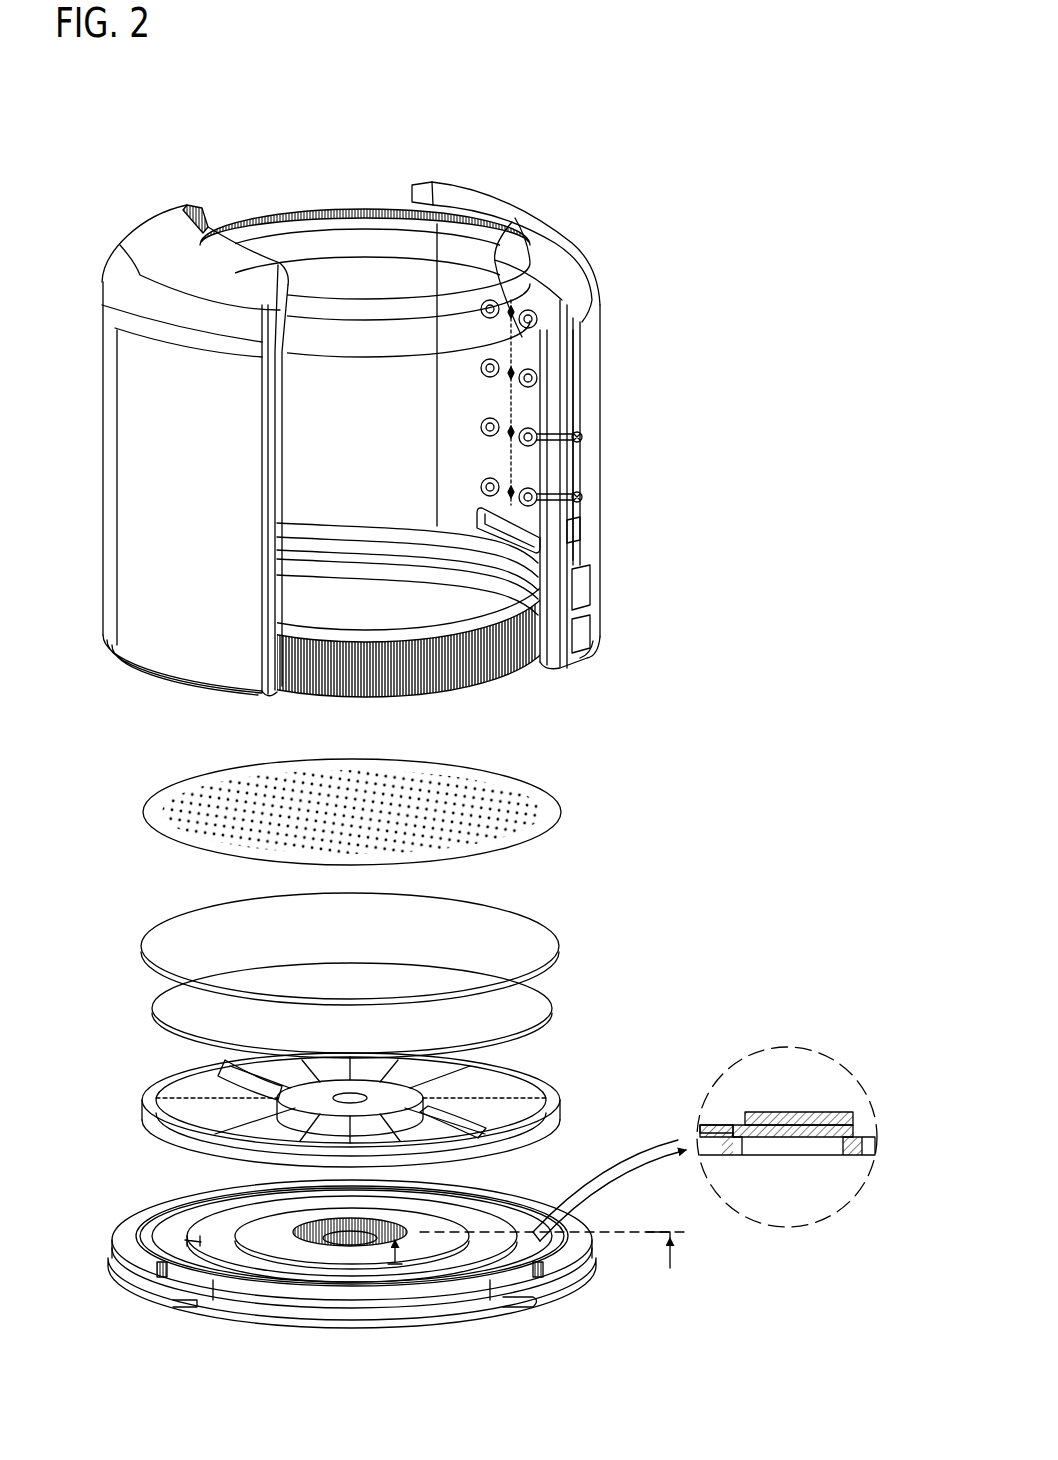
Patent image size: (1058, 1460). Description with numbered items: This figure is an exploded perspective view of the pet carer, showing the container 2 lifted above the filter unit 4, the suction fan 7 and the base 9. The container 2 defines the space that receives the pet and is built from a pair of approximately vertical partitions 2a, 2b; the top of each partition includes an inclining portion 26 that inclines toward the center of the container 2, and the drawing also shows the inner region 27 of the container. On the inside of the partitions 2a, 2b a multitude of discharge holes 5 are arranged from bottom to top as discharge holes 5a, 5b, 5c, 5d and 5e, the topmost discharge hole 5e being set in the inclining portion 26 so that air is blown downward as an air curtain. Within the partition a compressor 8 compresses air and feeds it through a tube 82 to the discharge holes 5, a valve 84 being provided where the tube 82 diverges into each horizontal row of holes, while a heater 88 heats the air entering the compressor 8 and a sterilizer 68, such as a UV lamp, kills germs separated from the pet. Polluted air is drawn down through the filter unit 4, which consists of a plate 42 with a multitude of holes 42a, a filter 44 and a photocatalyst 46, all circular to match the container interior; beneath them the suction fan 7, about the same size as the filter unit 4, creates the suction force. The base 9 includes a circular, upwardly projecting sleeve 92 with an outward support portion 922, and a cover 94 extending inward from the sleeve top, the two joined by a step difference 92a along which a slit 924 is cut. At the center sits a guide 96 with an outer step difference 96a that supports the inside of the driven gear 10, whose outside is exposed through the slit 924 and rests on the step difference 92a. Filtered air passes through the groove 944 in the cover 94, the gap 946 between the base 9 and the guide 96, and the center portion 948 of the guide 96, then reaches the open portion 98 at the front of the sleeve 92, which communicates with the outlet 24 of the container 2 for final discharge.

The container 2 is at (143, 218).
The partition 2a is at (100, 396).
The partition 2b is at (594, 244).
The inclining portion 26 is at (545, 227).
The inner cylinder 27 is at (362, 266).
The discharge hole 5 is at (664, 268).
The discharge hole 5a is at (530, 497).
The discharge hole 5b is at (530, 437).
The discharge hole 5c is at (530, 378).
The discharge hole 5d is at (528, 320).
The discharge hole 5e is at (511, 313).
The compressor 8 is at (597, 586).
The tube 82 is at (581, 548).
The valve 84 is at (575, 534).
The heater 88 is at (598, 626).
The sterilizer 68 is at (513, 525).
The outlet 24 is at (508, 668).
The filter unit 4 is at (648, 788).
The plate 42 is at (574, 798).
The holes 42a is at (497, 796).
The filter 44 is at (572, 940).
The photocatalyst 46 is at (572, 1003).
The suction fan 7 is at (574, 1100).
The base 9 is at (570, 1218).
The sleeve 92 is at (185, 1304).
The step difference 92a is at (560, 1262).
The support portion 922 is at (530, 1308).
The slit 924 is at (567, 1232).
The cover 94 is at (108, 1234).
The guide 96 is at (262, 1222).
The step difference 96a is at (142, 1228).
The groove 944 is at (247, 1266).
The gap 946 is at (300, 1262).
The center portion 948 is at (348, 1240).
The open portion 98 is at (352, 1305).
The driven gear 10 is at (455, 1300).